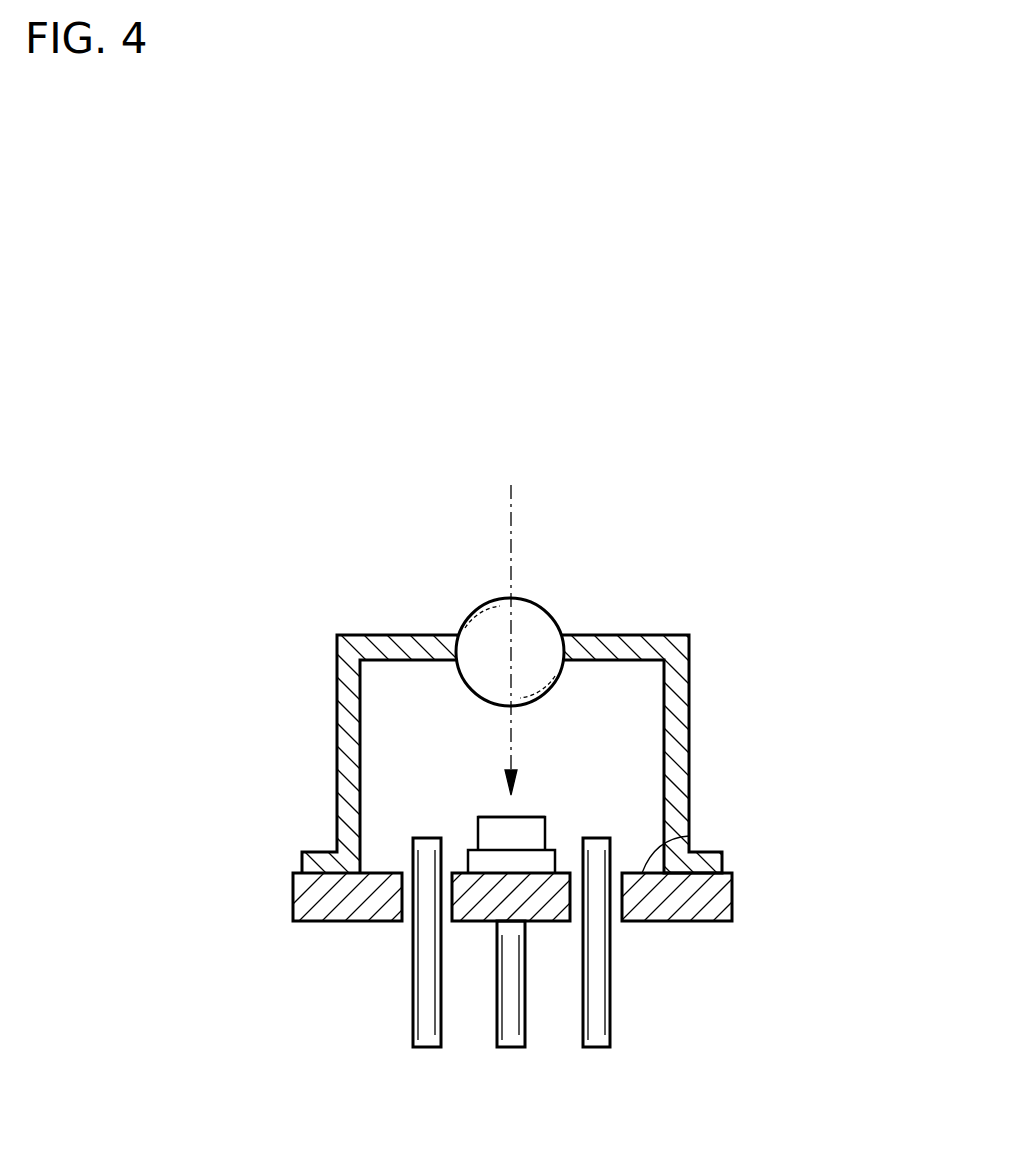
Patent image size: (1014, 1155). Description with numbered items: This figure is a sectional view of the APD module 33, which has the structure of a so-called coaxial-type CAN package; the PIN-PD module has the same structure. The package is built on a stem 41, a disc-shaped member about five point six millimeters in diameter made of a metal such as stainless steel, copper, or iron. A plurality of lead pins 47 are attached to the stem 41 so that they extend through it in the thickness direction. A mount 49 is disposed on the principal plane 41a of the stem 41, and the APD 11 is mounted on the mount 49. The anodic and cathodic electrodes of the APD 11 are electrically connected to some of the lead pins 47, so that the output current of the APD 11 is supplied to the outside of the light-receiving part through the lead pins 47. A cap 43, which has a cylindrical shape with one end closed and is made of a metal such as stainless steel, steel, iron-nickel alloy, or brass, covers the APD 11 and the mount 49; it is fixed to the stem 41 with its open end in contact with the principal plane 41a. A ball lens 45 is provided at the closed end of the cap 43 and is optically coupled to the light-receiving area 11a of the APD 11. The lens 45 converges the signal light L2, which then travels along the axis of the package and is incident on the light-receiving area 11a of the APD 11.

The APD 11 is at (527, 830).
The light-receiving area 11a is at (497, 817).
The APD module 33 is at (773, 603).
The stem 41 is at (718, 897).
The principal plane 41a is at (689, 835).
The cap 43 is at (689, 752).
The lens 45 is at (537, 627).
The lead pins 47 is at (630, 1053).
The mount 49 is at (548, 860).
The signal light L2 is at (513, 552).